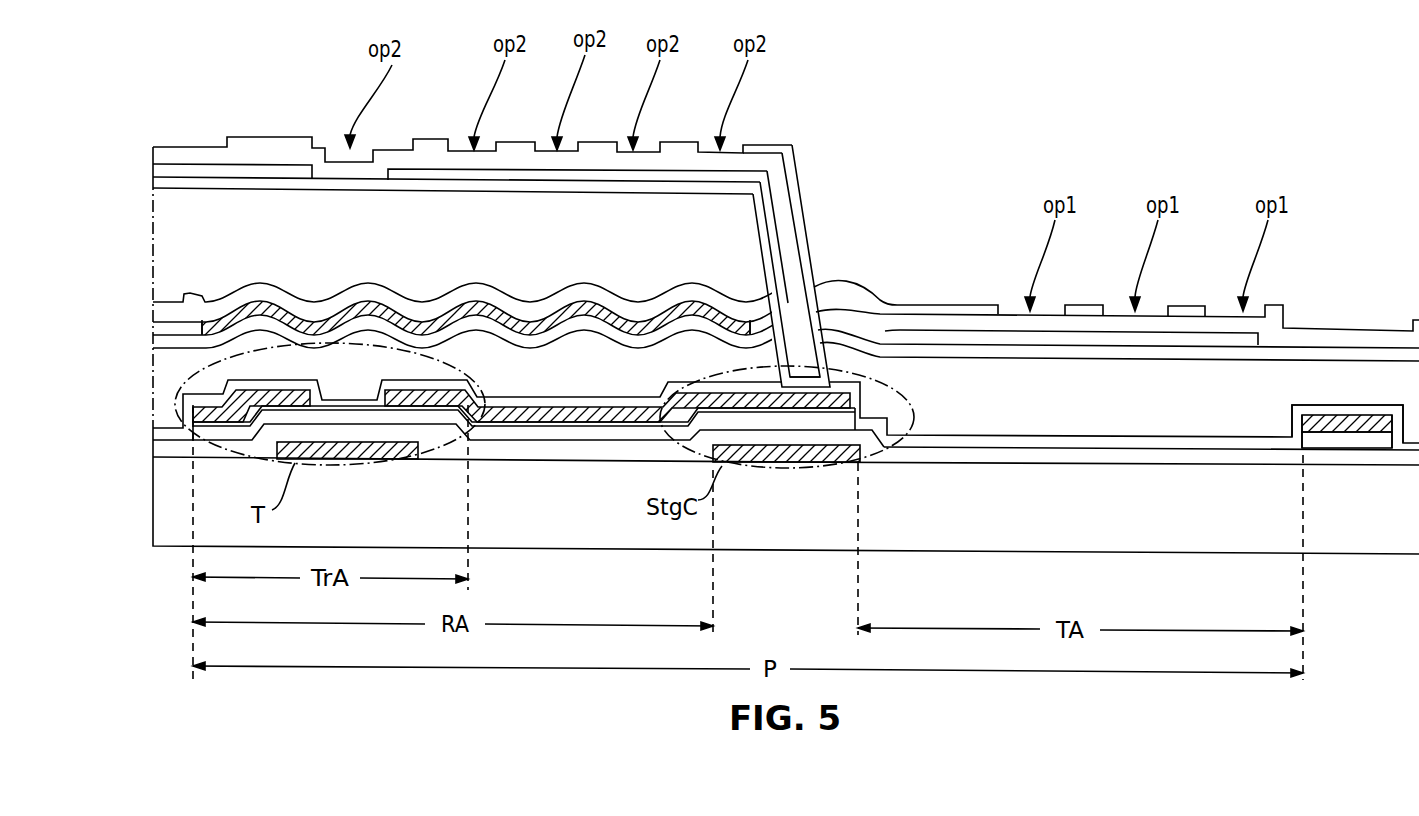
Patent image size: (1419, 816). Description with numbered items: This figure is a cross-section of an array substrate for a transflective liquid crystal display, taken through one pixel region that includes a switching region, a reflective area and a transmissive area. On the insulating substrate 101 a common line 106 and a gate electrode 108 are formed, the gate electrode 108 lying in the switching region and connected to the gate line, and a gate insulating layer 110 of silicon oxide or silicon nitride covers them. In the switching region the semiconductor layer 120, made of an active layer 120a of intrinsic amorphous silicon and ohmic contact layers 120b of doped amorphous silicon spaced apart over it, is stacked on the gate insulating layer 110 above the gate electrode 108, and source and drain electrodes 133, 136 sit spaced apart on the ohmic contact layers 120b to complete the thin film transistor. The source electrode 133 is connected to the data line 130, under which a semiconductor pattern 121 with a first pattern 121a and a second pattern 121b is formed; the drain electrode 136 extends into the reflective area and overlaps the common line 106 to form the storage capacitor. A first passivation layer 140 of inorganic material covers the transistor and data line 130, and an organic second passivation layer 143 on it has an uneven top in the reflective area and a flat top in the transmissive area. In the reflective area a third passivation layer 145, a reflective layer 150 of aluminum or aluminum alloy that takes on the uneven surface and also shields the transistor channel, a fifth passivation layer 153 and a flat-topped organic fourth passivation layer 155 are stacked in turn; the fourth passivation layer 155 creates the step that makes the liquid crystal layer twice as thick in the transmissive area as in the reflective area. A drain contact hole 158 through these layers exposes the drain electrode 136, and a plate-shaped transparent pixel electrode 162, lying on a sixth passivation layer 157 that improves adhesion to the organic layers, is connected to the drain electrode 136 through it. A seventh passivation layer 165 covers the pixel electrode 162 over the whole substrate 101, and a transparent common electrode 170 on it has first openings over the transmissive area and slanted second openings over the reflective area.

The insulating substrate 101 is at (1378, 556).
The common line 106 is at (778, 463).
The gate electrode 108 is at (352, 461).
The gate insulating layer 110 is at (990, 455).
The semiconductor layer 120 is at (562, 511).
The active layer 120a is at (490, 440).
The ohmic contact layers 120b is at (548, 428).
The semiconductor pattern 121 is at (1360, 556).
The first pattern 121a is at (1315, 448).
The second pattern 121b is at (1357, 435).
The data line 130 is at (1305, 425).
The source electrode 133 is at (275, 392).
The drain electrode 136 is at (420, 392).
The first passivation layer 140 is at (1055, 437).
The second passivation layer 143 is at (592, 372).
The third passivation layer 145 is at (172, 322).
The reflective layer 150 is at (690, 318).
The fifth passivation layer 153 is at (247, 297).
The fourth passivation layer 155 is at (182, 192).
The sixth passivation layer 157 is at (330, 140).
The drain contact hole 158 is at (807, 338).
The pixel electrode 162 is at (216, 170).
The seventh passivation layer 165 is at (922, 330).
The common electrode 170 is at (280, 137).